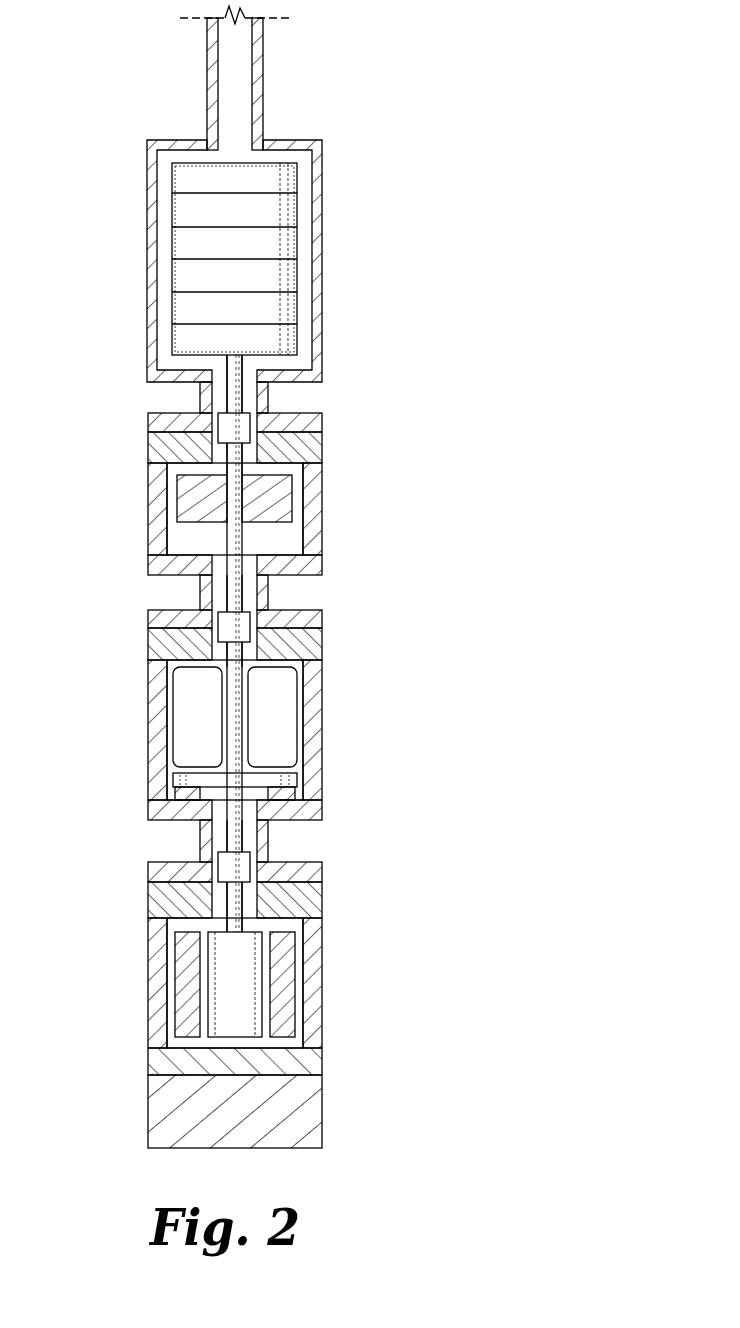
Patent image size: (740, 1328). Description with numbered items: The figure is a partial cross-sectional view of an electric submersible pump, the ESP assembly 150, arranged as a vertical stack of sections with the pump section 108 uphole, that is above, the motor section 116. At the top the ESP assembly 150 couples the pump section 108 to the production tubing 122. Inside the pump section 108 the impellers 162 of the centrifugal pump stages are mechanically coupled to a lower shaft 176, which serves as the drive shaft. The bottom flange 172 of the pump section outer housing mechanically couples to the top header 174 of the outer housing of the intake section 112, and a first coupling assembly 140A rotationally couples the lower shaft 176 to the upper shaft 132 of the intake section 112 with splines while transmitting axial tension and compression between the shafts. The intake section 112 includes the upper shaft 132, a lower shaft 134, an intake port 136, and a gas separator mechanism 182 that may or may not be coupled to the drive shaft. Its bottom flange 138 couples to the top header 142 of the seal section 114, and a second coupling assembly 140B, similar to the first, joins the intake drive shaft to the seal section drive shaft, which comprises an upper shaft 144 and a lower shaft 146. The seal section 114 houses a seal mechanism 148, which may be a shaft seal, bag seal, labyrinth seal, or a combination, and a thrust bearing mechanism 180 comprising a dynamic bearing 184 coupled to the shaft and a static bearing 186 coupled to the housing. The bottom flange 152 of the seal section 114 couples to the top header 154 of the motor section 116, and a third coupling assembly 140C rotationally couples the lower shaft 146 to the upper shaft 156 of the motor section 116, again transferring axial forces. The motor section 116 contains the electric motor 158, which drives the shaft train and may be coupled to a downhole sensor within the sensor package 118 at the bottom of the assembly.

The production tubing 122 is at (263, 80).
The ESP assembly 150 is at (503, 152).
The pump section 108 is at (350, 298).
The impellers 162 is at (170, 307).
The lower shaft 176 is at (245, 388).
The bottom flange 172 is at (158, 426).
The first coupling assembly 140A is at (232, 432).
The top header 174 is at (162, 452).
The gas separator mechanism 182 is at (183, 488).
The upper shaft 132 is at (243, 466).
The intake section 112 is at (342, 520).
The intake port 136 is at (185, 582).
The lower shaft 134 is at (243, 592).
The bottom flange 138 is at (160, 622).
The second coupling assembly 140B is at (232, 632).
The top header 142 is at (162, 650).
The upper shaft 144 is at (243, 660).
The seal mechanism 148 is at (185, 722).
The seal section 114 is at (342, 730).
The dynamic bearing 184 is at (298, 779).
The static bearing 186 is at (296, 797).
The thrust bearing mechanism 180 is at (138, 797).
The lower shaft 146 is at (243, 836).
The bottom flange 152 is at (160, 873).
The third coupling assembly 140C is at (232, 872).
The top header 154 is at (163, 902).
The upper shaft 156 is at (243, 896).
The motor section 116 is at (343, 960).
The electric motor 158 is at (175, 983).
The sensor package 118 is at (343, 1108).